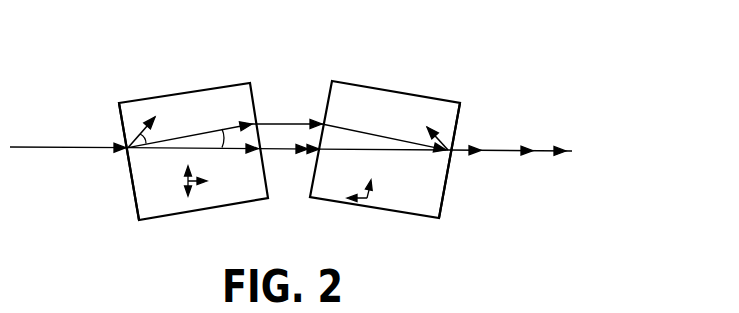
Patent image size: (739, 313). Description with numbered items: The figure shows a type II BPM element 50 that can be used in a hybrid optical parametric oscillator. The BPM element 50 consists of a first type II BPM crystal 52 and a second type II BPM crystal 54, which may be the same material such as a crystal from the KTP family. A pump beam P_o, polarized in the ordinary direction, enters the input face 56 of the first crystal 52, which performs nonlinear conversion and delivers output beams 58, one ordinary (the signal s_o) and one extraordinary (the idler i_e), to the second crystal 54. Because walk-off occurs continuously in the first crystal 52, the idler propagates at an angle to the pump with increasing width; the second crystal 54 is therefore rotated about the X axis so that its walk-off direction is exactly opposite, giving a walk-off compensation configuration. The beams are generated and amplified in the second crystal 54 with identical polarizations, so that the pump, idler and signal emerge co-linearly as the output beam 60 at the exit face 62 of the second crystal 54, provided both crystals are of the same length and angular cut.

The type II BPM element 50 is at (556, 45).
The first type II BPM crystal 52 is at (188, 92).
The second type II BPM crystal 54 is at (374, 86).
The input face 56 is at (137, 205).
The output beams 58 is at (286, 91).
The output beam 60 is at (540, 152).
The exit face 62 is at (442, 207).